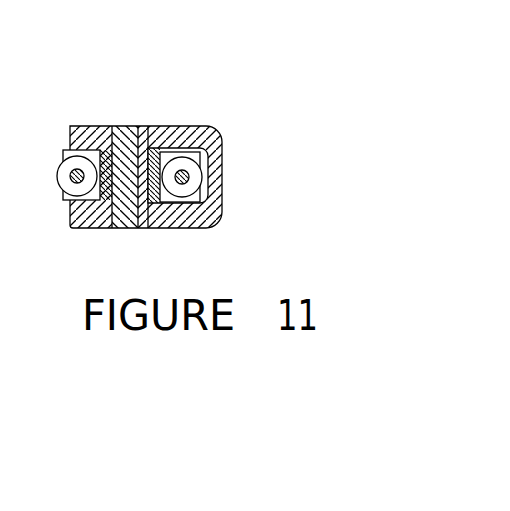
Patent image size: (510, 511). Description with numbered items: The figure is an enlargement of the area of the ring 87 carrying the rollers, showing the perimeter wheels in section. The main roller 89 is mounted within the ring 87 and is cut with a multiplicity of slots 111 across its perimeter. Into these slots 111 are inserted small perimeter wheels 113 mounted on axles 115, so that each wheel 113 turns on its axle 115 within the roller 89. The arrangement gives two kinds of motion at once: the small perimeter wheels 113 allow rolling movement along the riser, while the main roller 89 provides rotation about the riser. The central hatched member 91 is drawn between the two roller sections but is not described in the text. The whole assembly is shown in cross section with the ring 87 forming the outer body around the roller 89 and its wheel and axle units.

The ring 87 is at (222, 207).
The roller 89 is at (188, 127).
The central spacer 91 is at (133, 126).
The slot 111 is at (213, 130).
The wheel 113 is at (189, 164).
The axle 115 is at (190, 177).